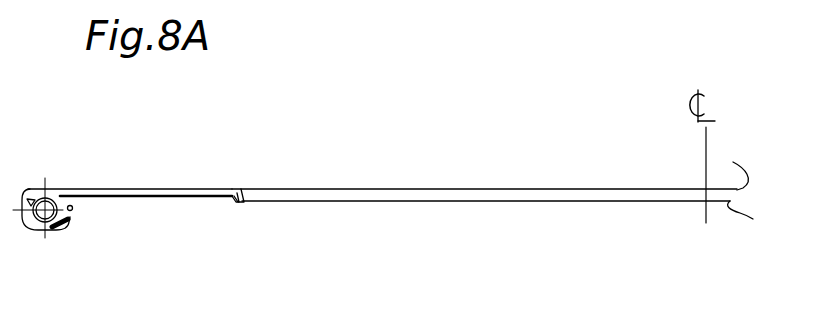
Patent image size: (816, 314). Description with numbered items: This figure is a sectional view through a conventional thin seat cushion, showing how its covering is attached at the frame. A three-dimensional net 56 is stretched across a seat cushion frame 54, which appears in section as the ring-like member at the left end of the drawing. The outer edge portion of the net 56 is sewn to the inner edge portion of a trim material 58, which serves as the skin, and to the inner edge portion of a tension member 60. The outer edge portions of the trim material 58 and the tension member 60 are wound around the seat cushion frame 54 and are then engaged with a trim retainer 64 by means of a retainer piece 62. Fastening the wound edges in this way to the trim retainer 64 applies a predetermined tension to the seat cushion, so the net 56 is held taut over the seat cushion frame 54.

The seat cushion frame 54 is at (58, 197).
The 3-D net 56 is at (326, 189).
The trim material 58 is at (132, 188).
The tension member 60 is at (148, 196).
The retainer piece 62 is at (71, 225).
The trim retainer 64 is at (72, 209).